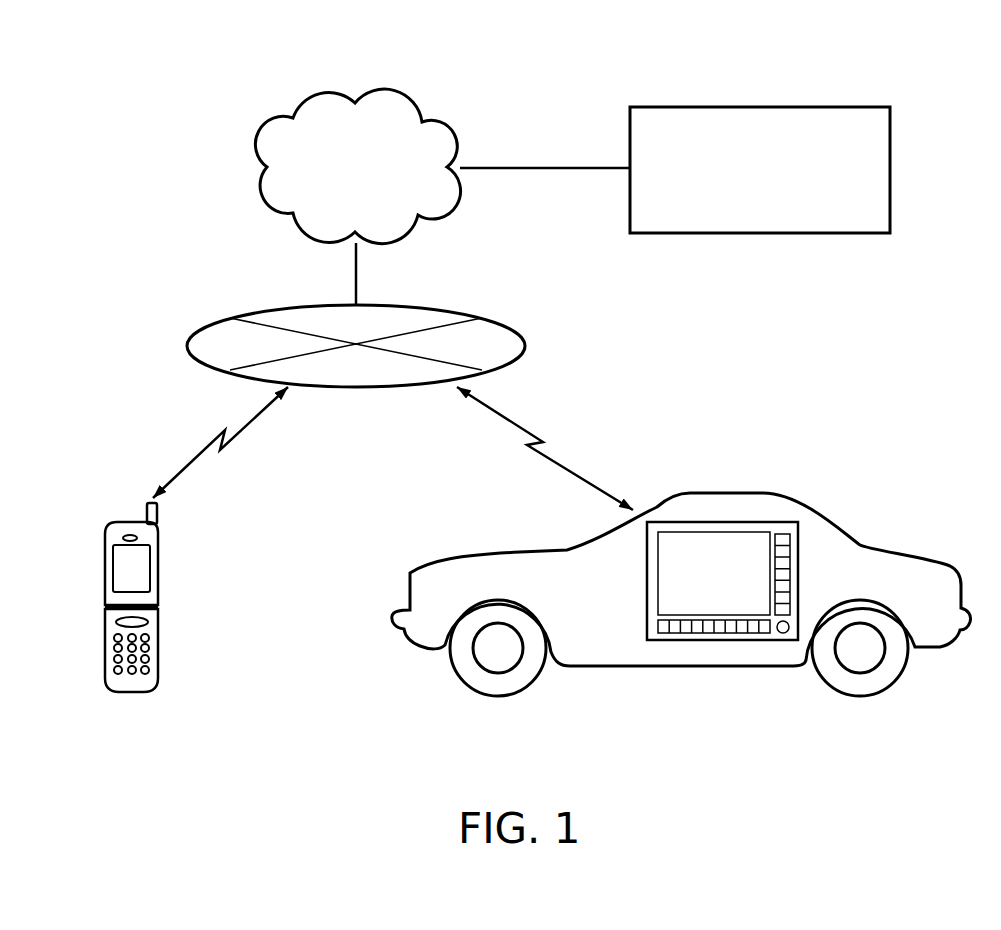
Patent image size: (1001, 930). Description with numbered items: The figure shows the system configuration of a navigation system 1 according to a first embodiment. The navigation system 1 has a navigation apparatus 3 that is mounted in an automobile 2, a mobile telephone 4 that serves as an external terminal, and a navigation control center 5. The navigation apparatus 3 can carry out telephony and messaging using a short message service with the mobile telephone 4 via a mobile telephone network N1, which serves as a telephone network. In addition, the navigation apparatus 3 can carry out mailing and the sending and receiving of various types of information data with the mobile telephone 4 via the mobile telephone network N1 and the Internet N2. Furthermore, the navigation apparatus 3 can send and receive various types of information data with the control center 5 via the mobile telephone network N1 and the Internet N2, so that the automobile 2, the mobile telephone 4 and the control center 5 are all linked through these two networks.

The navigation system 1 is at (225, 87).
The automobile 2 is at (681, 564).
The navigation apparatus 3 is at (647, 588).
The mobile telephone 4 is at (105, 596).
The navigation control center 5 is at (891, 168).
The mobile telephone network N1 is at (526, 346).
The Internet N2 is at (386, 93).